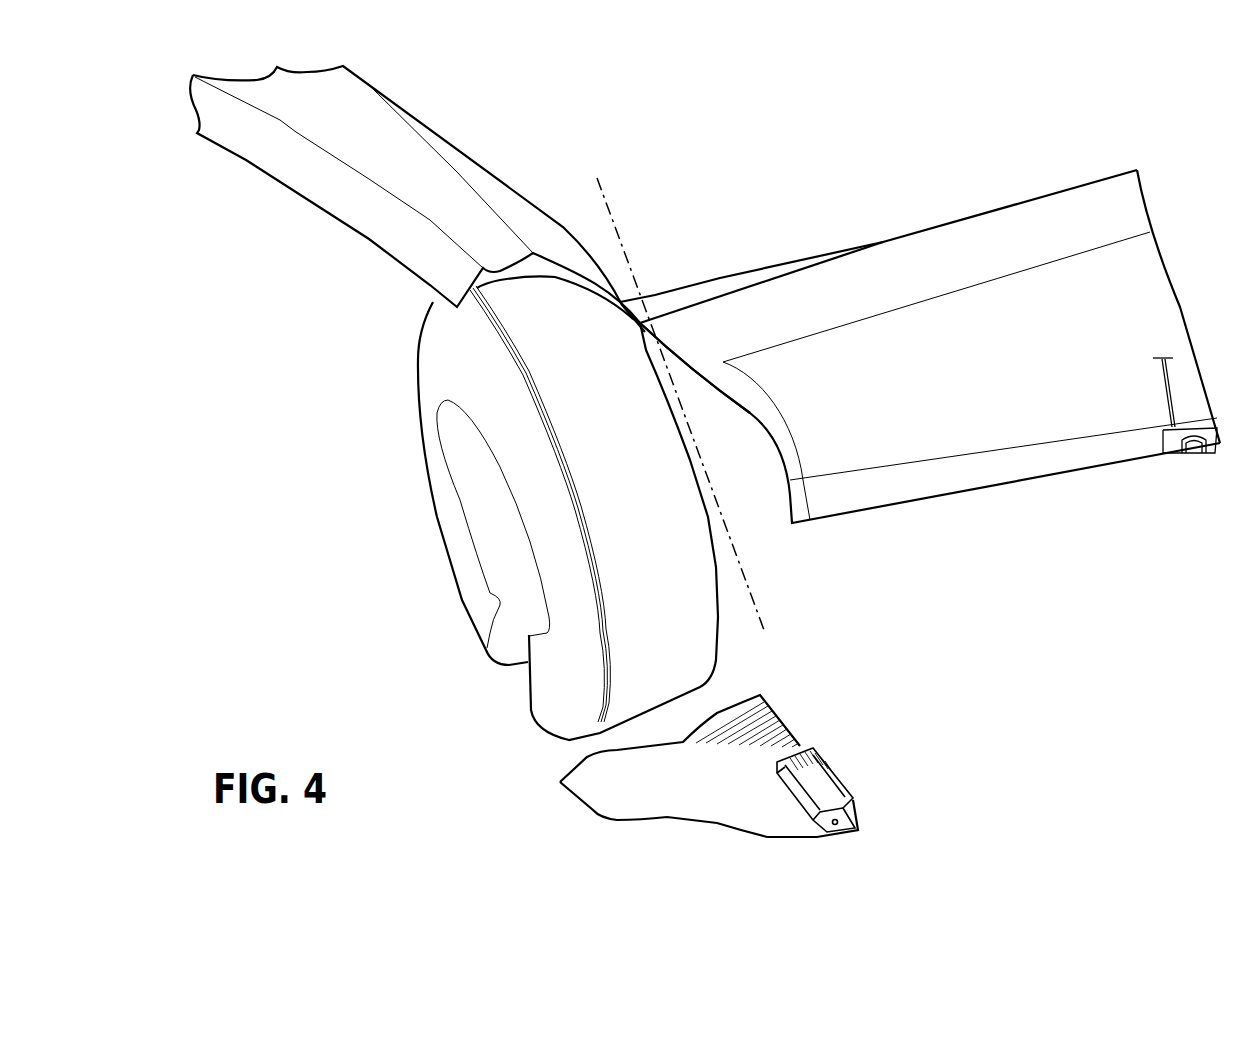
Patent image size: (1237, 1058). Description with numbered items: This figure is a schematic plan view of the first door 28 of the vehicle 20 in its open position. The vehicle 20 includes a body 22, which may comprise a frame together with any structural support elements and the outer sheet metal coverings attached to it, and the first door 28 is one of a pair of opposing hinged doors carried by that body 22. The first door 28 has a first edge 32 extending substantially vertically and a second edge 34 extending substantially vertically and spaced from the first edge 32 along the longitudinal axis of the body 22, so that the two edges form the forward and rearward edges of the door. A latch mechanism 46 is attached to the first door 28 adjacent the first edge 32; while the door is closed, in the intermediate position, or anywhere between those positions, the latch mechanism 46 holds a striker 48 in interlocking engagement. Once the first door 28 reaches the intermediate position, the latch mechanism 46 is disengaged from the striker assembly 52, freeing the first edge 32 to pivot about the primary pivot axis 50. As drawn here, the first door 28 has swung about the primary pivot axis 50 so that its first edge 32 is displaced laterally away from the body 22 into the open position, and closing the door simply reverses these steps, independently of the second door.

The vehicle 20 is at (757, 187).
The body 22 is at (420, 122).
The first door 28 is at (983, 210).
The first edge 32 is at (1160, 245).
The second edge 34 is at (752, 414).
The latch mechanism 46 is at (1168, 442).
The striker 48 is at (843, 787).
The primary pivot axis 50 is at (617, 220).
The striker assembly 52 is at (830, 763).